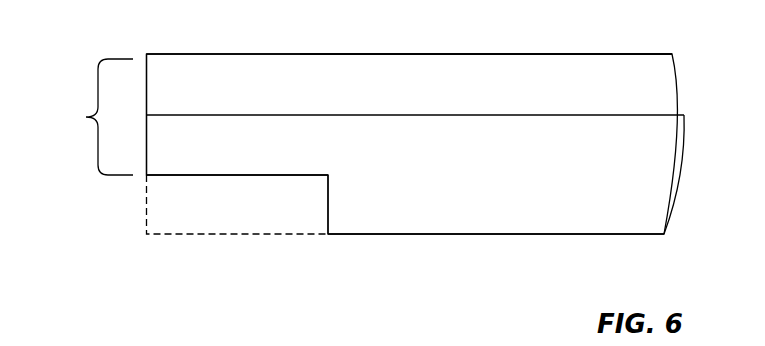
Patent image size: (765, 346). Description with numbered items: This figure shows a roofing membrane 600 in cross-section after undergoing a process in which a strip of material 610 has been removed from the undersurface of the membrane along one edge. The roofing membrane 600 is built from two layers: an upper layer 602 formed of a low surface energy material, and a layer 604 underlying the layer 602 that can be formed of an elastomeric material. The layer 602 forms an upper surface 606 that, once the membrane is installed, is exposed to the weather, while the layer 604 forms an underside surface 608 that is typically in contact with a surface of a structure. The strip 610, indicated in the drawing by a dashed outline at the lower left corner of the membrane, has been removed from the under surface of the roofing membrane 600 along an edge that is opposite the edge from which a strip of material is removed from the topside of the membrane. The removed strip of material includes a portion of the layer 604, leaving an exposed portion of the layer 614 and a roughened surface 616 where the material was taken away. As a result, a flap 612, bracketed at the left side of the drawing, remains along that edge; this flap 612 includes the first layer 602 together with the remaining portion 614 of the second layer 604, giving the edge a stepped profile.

The roofing membrane 600 is at (286, 33).
The layer 602 is at (587, 82).
The layer 604 is at (598, 199).
The upper surface 606 is at (438, 54).
The underside surface 608 is at (491, 235).
The strip of material 610 is at (172, 223).
The flap 612 is at (88, 114).
The exposed portion of the layer 614 is at (257, 158).
The roughened surface 616 is at (295, 175).